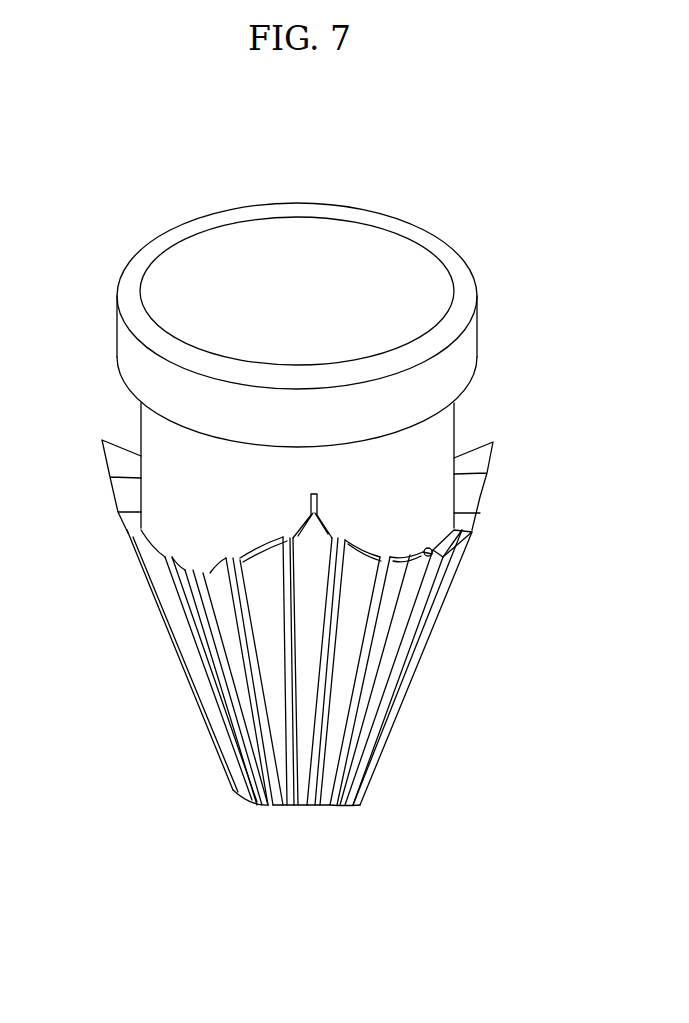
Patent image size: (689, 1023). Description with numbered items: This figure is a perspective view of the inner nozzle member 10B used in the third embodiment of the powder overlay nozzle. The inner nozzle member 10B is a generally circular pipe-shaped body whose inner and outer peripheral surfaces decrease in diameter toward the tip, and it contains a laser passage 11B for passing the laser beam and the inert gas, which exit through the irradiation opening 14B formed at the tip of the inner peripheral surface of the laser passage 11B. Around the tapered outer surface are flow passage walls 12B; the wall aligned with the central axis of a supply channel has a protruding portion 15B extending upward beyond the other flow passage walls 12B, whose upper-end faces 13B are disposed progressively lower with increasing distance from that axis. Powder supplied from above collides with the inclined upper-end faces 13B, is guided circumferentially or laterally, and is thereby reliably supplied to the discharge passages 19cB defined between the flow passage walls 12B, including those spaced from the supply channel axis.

The inner nozzle member 10B is at (457, 218).
The laser passage 11B is at (322, 294).
The flow passage walls 12B is at (480, 500).
The upper-end faces 13B is at (362, 548).
The irradiation opening 14B is at (345, 804).
The protruding portion 15B is at (290, 533).
The discharge passages 19cB is at (440, 540).